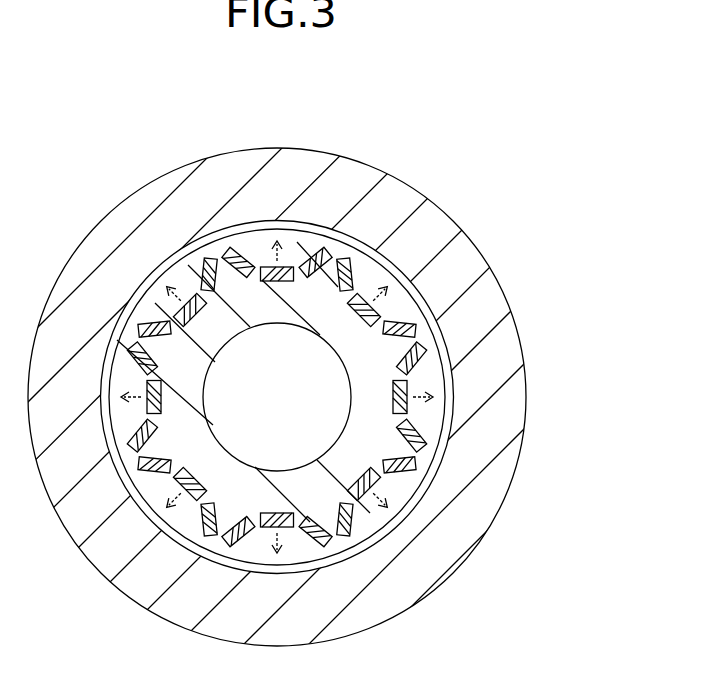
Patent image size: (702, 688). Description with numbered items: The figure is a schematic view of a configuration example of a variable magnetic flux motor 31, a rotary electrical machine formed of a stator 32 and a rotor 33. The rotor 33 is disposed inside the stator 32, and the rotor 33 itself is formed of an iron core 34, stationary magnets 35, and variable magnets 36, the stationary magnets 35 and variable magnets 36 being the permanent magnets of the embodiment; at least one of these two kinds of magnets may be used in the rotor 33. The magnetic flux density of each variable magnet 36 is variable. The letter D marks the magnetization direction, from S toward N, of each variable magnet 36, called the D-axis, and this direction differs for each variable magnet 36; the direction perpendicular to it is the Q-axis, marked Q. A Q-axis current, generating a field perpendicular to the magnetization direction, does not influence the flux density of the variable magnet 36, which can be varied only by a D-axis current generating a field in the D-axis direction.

The variable magnetic flux motor 31 is at (462, 155).
The stator 32 is at (510, 480).
The rotor 33 is at (503, 200).
The iron core 34 is at (400, 315).
The stationary magnet 35 is at (390, 328).
The variable magnet 36 is at (410, 378).